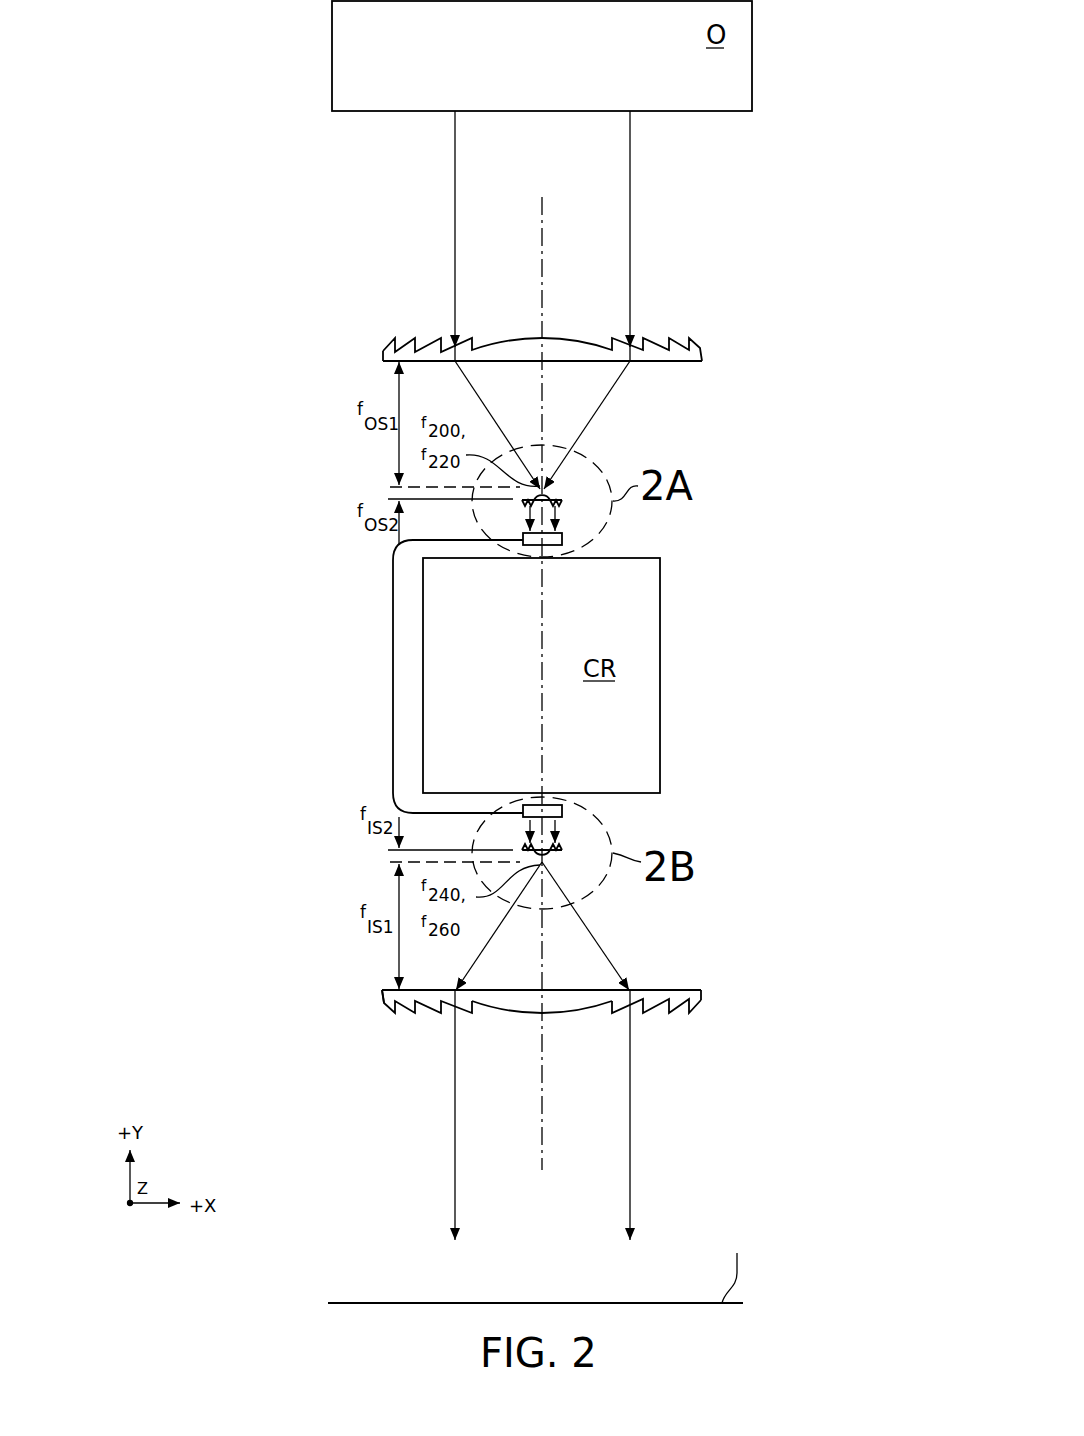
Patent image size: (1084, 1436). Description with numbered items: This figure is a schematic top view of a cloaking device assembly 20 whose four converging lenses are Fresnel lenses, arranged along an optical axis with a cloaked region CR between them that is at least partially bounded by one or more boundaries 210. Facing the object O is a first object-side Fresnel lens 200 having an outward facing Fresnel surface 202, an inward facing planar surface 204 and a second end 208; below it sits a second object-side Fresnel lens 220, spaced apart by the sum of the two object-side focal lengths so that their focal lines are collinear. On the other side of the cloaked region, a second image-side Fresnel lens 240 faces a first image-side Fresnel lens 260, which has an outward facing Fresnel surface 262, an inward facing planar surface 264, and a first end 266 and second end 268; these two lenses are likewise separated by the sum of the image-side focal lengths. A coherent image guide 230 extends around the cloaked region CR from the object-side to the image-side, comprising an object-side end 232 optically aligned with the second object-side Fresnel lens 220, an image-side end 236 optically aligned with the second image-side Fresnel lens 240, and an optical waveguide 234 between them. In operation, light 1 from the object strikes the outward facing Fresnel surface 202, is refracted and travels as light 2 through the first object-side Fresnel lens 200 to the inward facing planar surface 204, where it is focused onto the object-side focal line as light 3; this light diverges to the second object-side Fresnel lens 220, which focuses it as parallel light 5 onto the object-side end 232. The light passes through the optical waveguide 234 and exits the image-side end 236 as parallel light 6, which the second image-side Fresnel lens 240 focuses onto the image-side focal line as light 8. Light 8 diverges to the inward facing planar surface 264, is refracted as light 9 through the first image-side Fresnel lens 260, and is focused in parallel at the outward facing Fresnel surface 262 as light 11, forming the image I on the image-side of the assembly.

The light from an object 1 is at (455, 175).
The light propagating through the first object-side Fresnel lens 2 is at (456, 351).
The light propagating to the second object-side Fresnel lens 3 is at (497, 397).
The parallel light 5 is at (528, 507).
The parallel light exiting the image-side end 6 is at (528, 831).
The light propagating to the first image-side Fresnel lens 8 is at (496, 947).
The light propagating through the first image-side Fresnel lens 9 is at (454, 990).
The parallel light forming the image 11 is at (450, 1127).
The cloaking device assembly 20 is at (812, 135).
The first object-side Fresnel lens 200 is at (555, 333).
The outward facing Fresnel surface 202 is at (700, 357).
The inward facing planar surface 204 is at (686, 363).
The second end 208 is at (383, 355).
The boundary 210 is at (487, 560).
The second object-side Fresnel lens 220 is at (586, 496).
The coherent image guide 230 is at (501, 677).
The object-side end 232 is at (563, 539).
The optical waveguide 234 is at (392, 659).
The image-side end 236 is at (563, 811).
The second image-side Fresnel lens 240 is at (573, 863).
The first image-side Fresnel lens 260 is at (549, 1020).
The outward facing Fresnel surface 262 is at (592, 1012).
The inward facing planar surface 264 is at (683, 990).
The first end 266 is at (703, 990).
The second end 268 is at (383, 992).